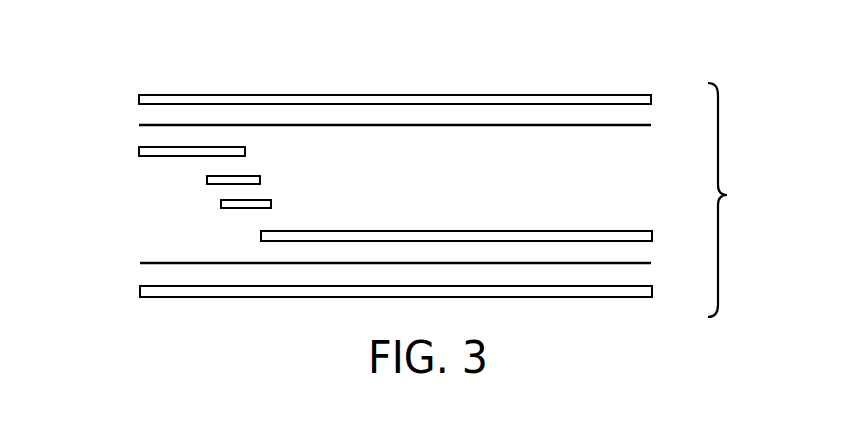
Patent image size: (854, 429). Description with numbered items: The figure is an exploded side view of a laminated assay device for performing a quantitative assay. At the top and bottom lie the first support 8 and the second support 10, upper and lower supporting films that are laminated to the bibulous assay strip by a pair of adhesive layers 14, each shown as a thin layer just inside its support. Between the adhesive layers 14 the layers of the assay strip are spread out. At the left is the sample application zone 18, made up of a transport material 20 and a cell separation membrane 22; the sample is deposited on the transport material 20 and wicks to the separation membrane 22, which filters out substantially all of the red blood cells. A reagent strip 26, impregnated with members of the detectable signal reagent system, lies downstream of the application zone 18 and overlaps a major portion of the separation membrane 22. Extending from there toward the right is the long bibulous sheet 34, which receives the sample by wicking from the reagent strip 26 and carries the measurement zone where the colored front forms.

The first support 8 is at (300, 95).
The second support 10 is at (258, 298).
The adhesive layers 14 is at (615, 127).
The sample application zone 18 is at (195, 172).
The transport material 20 is at (145, 153).
The cell separation membrane 22 is at (208, 180).
The reagent strip 26 is at (228, 208).
The bibulous sheet 34 is at (567, 231).